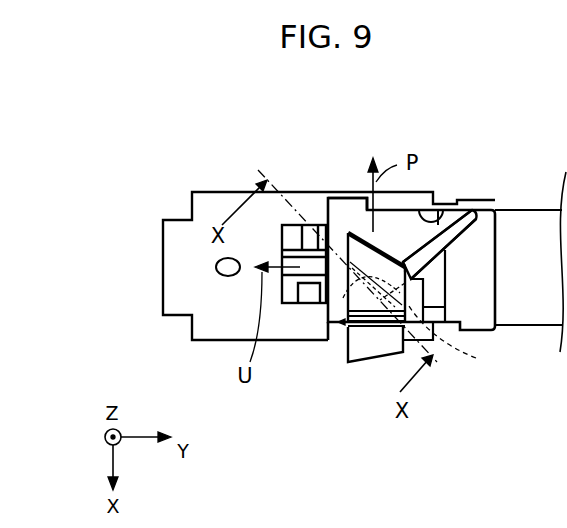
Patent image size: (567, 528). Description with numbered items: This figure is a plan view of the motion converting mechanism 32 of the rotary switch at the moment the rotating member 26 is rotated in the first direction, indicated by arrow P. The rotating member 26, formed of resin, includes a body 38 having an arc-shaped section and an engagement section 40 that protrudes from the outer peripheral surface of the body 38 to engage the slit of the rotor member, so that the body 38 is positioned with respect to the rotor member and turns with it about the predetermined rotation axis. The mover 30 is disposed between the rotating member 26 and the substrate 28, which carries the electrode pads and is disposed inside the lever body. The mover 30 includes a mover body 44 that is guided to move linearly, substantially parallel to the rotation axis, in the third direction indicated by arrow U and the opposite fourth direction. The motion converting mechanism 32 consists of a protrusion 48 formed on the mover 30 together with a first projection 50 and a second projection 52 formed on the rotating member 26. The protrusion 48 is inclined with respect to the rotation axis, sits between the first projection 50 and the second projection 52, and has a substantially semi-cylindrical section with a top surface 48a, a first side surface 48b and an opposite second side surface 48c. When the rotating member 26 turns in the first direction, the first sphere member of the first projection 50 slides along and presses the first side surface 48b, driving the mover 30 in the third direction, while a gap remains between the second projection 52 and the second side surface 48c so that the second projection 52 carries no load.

The substrate 28 is at (208, 322).
The motion converting mechanism 32 is at (480, 158).
The mover body 44 is at (341, 222).
The mover 30 is at (347, 238).
The protrusion 48 is at (333, 330).
The top surface 48a is at (467, 215).
The first side surface 48b is at (478, 234).
The second side surface 48c is at (446, 222).
The second projection 52 is at (322, 315).
The engagement section 40 is at (362, 322).
The rotating member 26 is at (373, 330).
The body 38 is at (383, 350).
The first projection 50 is at (455, 339).